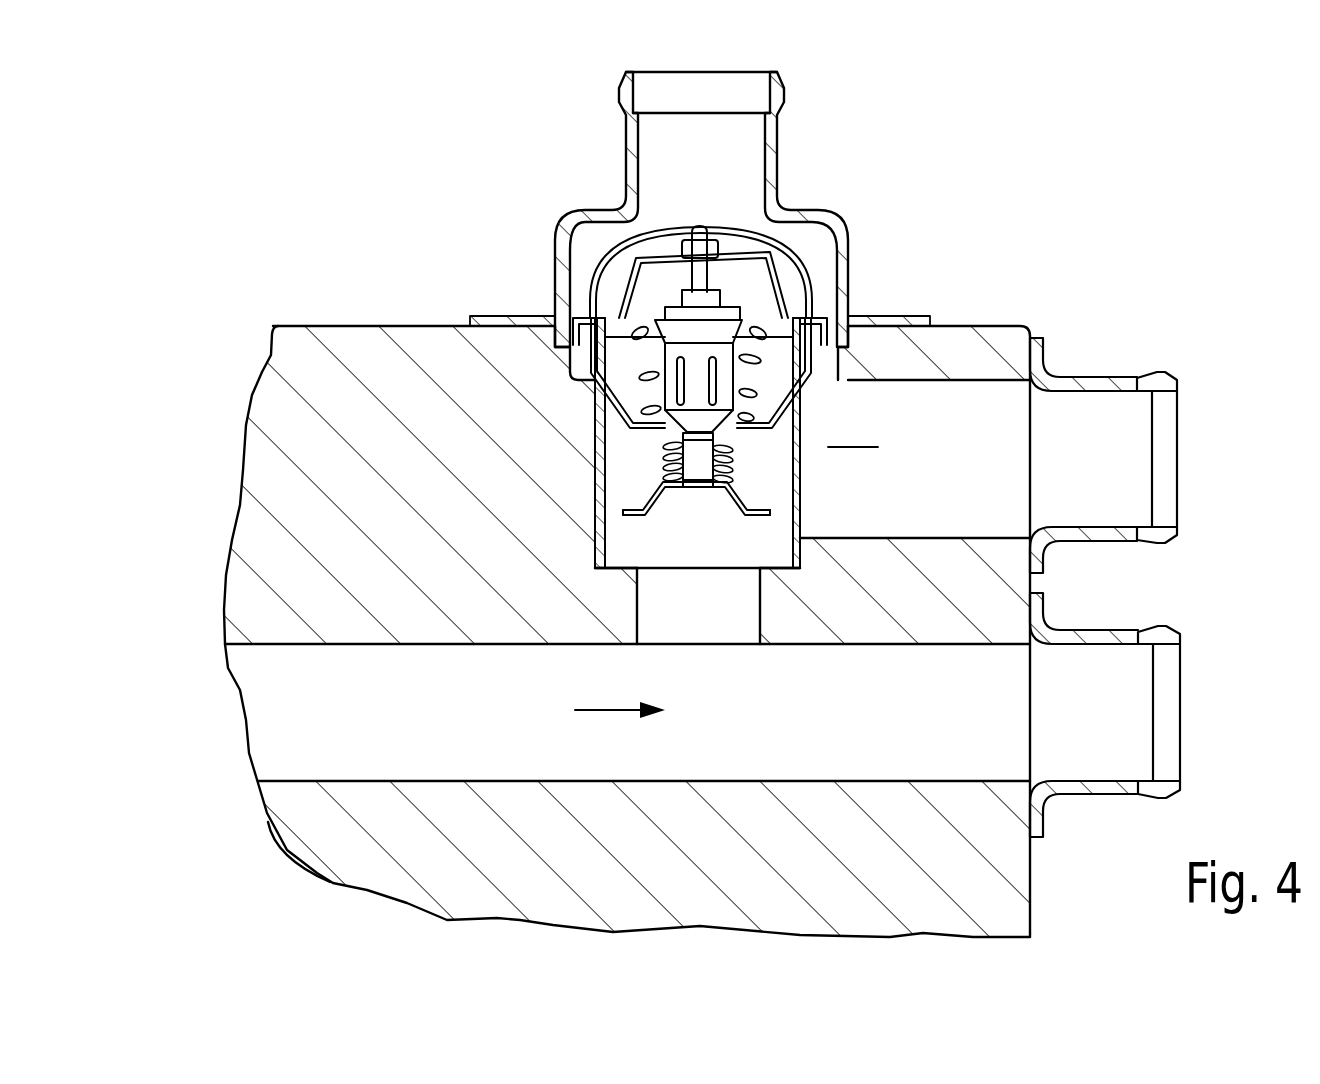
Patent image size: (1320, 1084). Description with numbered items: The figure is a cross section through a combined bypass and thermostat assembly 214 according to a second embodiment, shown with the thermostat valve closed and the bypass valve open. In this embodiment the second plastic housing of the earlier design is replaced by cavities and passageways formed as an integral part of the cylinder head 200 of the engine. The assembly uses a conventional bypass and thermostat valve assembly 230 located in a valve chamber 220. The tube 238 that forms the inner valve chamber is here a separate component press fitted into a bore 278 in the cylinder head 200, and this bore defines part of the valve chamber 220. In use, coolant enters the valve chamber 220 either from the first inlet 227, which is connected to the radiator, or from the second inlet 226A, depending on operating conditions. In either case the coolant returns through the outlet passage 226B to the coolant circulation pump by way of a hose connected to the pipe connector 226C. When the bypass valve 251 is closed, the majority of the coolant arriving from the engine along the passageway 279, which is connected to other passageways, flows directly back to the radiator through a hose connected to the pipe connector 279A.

The cylinder head 200 is at (252, 443).
The bypass and thermostat assembly 214 is at (512, 326).
The valve chamber 220 is at (734, 337).
The second inlet 226A is at (758, 636).
The outlet passage 226B is at (946, 382).
The pipe connector 226C is at (1082, 377).
The first inlet 227 is at (763, 140).
The bypass and thermostat valve assembly 230 is at (733, 313).
The tube 238 is at (800, 492).
The bypass valve 251 is at (645, 512).
The bore 278 is at (797, 557).
The passageway 279 is at (415, 783).
The pipe connector 279A is at (1120, 627).